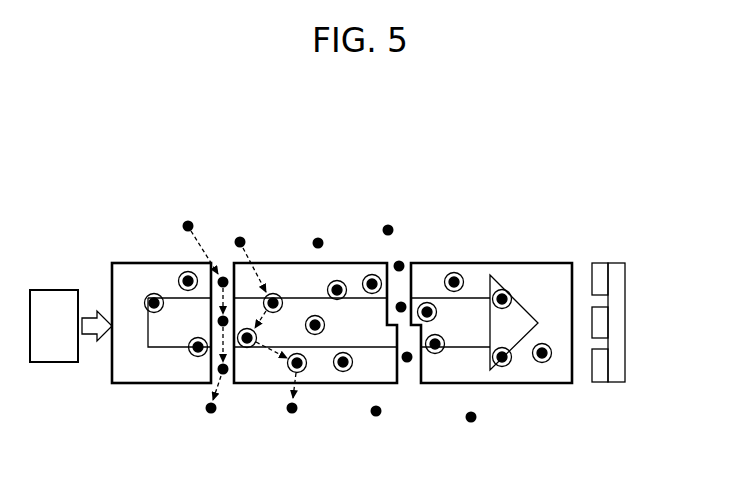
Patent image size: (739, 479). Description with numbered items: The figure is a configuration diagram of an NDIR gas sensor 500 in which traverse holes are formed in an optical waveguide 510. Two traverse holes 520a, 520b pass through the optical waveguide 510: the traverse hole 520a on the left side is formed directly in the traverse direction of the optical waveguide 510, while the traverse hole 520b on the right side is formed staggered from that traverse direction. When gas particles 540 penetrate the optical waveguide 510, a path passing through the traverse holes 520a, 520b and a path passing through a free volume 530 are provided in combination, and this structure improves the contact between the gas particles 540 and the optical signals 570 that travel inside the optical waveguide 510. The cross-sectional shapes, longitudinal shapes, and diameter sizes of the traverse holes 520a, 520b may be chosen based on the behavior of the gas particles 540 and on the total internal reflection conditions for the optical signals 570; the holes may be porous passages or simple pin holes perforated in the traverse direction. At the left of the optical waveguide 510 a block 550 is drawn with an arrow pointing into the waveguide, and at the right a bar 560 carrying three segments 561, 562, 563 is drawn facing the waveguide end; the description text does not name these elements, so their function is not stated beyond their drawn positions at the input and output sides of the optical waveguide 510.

The gas sensor 500 is at (412, 153).
The optical waveguide 510 is at (489, 384).
The traverse hole 520a is at (226, 263).
The traverse hole 520b is at (402, 290).
The free volume 530 is at (274, 293).
The gas particles 540 is at (188, 220).
The light source 550 is at (52, 288).
The detector 560 is at (620, 360).
The first detector element 561 is at (598, 275).
The second detector element 562 is at (606, 322).
The third detector element 563 is at (598, 372).
The optical signals 570 is at (516, 312).